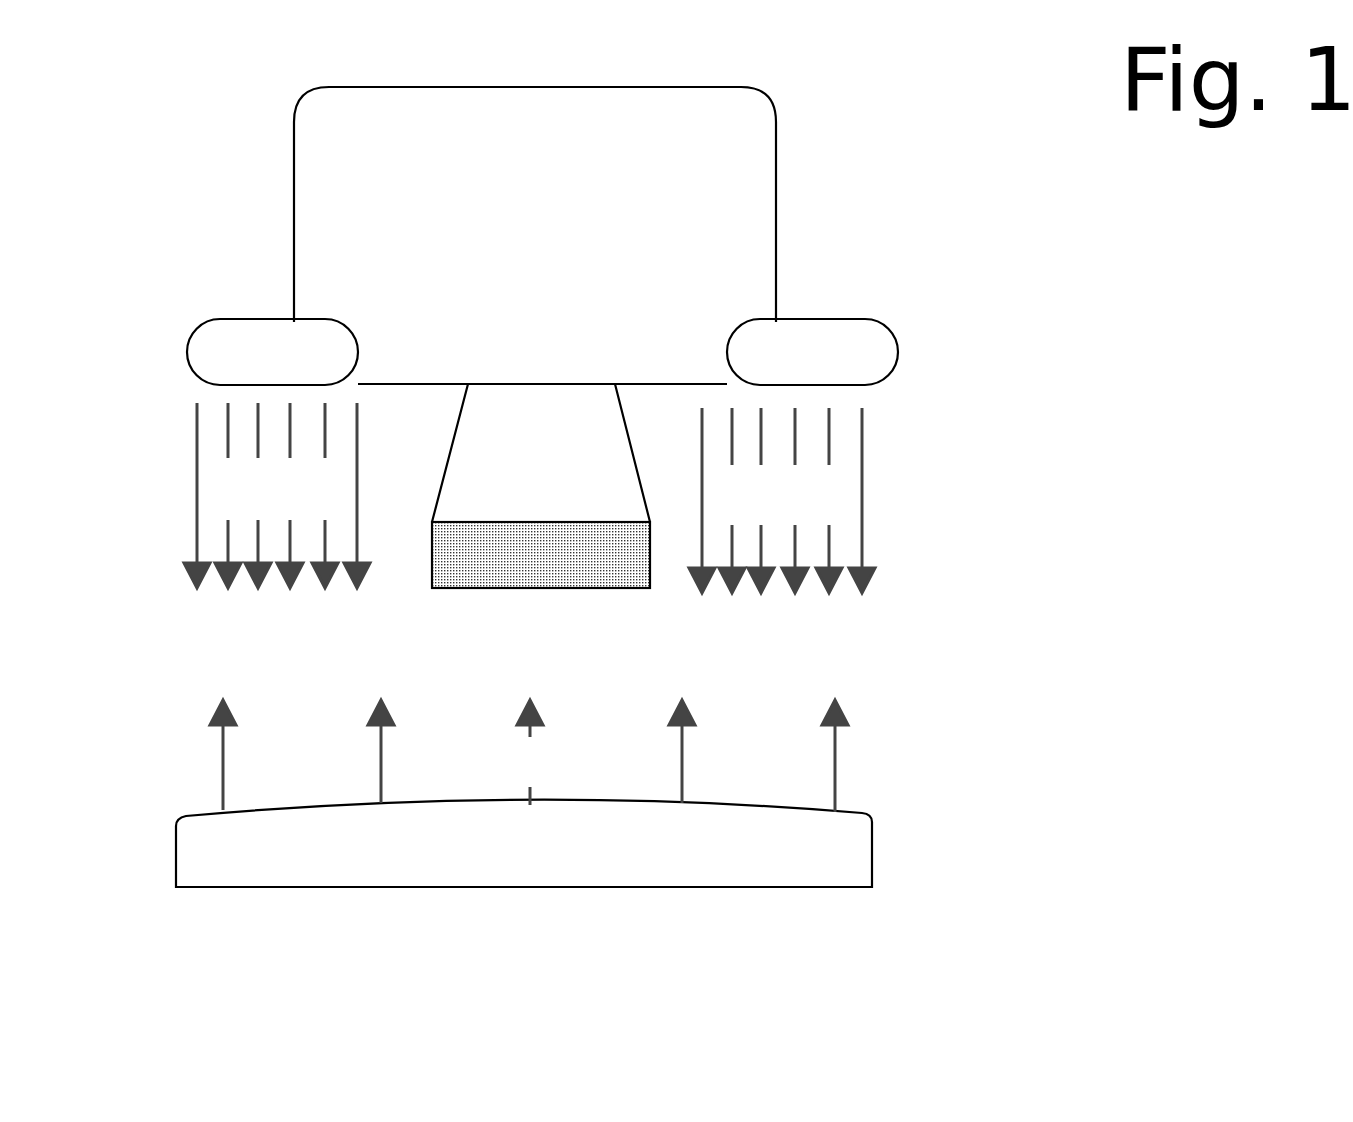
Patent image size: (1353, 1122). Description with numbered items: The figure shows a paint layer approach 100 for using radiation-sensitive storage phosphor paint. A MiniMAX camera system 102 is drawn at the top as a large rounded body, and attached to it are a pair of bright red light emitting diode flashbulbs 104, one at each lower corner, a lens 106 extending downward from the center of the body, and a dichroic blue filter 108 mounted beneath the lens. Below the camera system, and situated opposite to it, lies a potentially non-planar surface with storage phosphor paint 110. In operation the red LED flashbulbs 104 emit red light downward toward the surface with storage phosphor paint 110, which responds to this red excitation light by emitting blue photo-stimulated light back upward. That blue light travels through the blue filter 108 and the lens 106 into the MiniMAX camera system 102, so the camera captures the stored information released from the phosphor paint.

The paint layer approach 100 is at (1192, 318).
The MiniMAX camera system 102 is at (800, 144).
The red light emitting diode (LED) flashbulb 104 is at (910, 360).
The lens 106 is at (455, 476).
The dichroic blue filter 108 is at (577, 598).
The surface with storage phosphor paint 110 is at (727, 898).